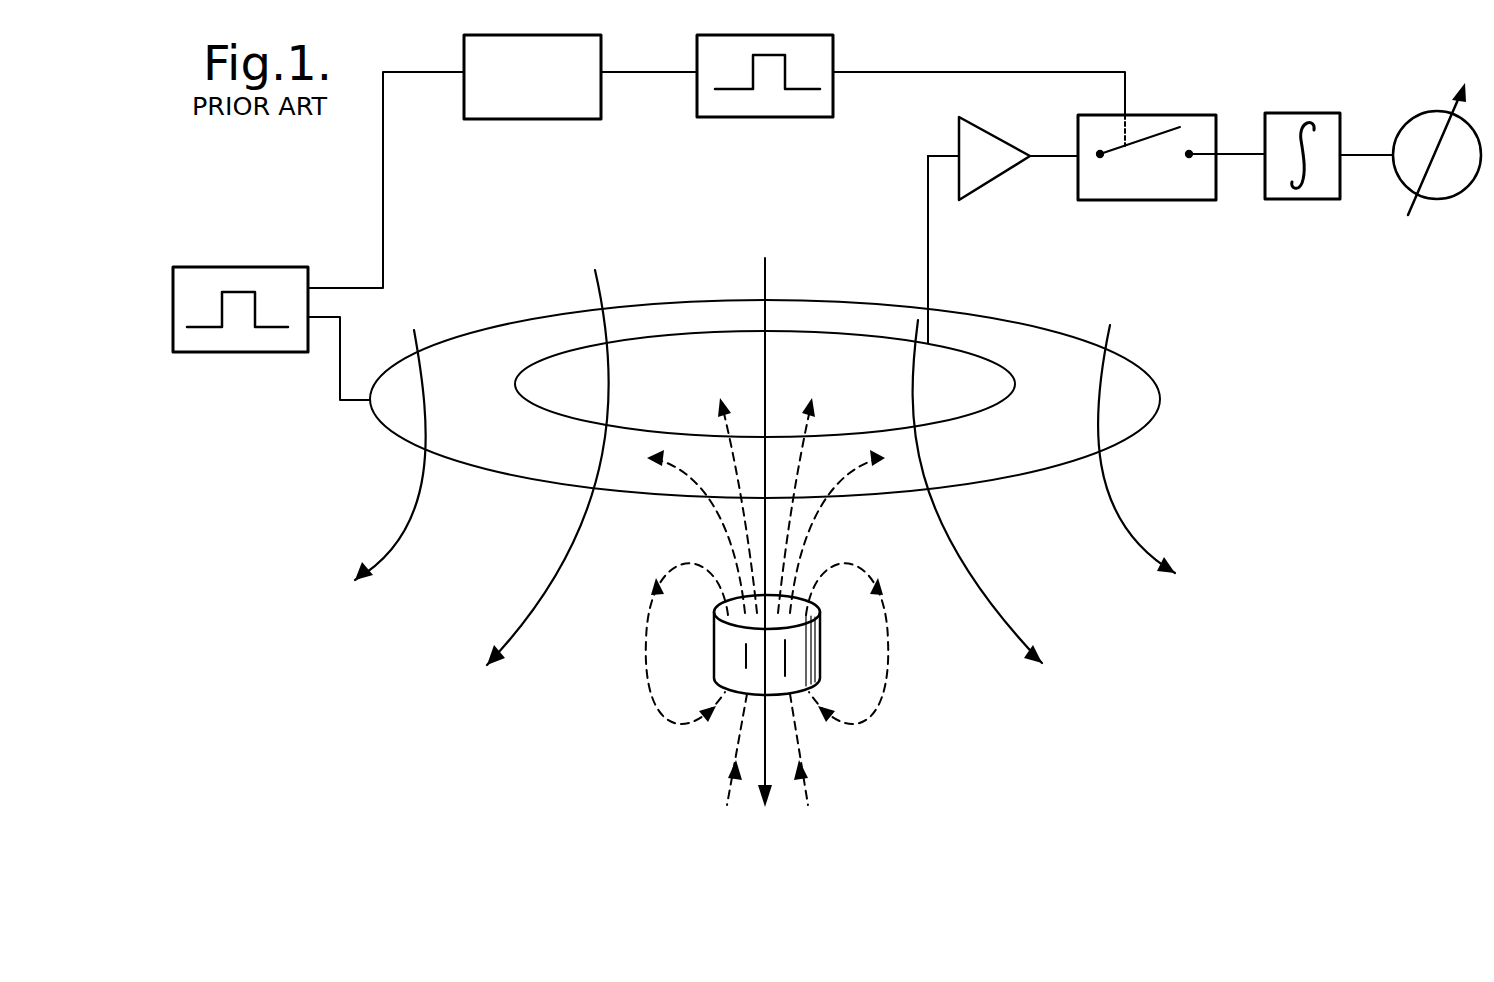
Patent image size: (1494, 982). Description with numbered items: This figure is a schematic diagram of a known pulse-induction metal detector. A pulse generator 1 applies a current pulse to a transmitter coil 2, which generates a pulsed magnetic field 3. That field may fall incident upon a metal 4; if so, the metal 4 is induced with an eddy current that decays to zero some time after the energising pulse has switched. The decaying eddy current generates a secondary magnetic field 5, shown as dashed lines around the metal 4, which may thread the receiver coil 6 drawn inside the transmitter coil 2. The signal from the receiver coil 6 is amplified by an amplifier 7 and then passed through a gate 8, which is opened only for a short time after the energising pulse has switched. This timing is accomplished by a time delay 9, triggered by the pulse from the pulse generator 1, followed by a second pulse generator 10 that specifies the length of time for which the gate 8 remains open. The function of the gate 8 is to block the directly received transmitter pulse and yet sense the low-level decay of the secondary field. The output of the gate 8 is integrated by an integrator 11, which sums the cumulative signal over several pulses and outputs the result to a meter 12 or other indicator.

The pulse generator 1 is at (213, 352).
The transmitter coil 2 is at (503, 325).
The pulsed magnetic field 3 is at (528, 620).
The metal 4 is at (706, 660).
The secondary magnetic field 5 is at (895, 643).
The receiver coil 6 is at (1012, 380).
The amplifier 7 is at (985, 172).
The gate 8 is at (1153, 185).
The time delay 9 is at (540, 119).
The pulse generator 10 is at (815, 117).
The integrator 11 is at (1315, 199).
The meter 12 is at (1452, 190).